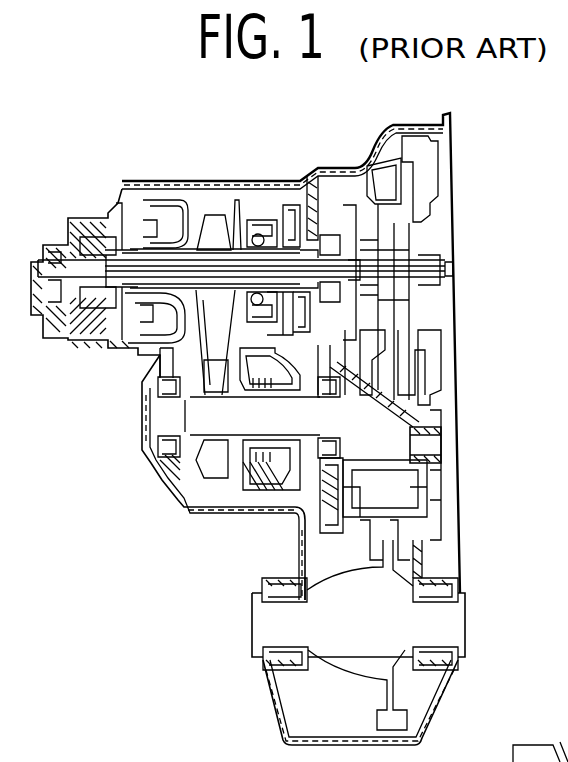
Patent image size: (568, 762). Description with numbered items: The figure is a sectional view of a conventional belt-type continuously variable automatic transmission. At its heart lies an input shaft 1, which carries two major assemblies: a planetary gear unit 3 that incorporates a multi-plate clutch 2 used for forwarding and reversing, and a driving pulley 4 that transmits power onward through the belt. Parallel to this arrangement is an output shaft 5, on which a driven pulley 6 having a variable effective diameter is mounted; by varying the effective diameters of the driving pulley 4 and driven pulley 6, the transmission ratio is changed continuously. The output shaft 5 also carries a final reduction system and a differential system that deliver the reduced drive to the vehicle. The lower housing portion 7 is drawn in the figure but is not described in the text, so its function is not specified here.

The input shaft 1 is at (445, 269).
The multi-plate clutch 2 is at (378, 162).
The planetary gear unit 3 is at (283, 197).
The driving pulley 4 is at (206, 192).
The output shaft 5 is at (362, 420).
The driven pulley 6 is at (192, 414).
The lower case 7 is at (457, 620).